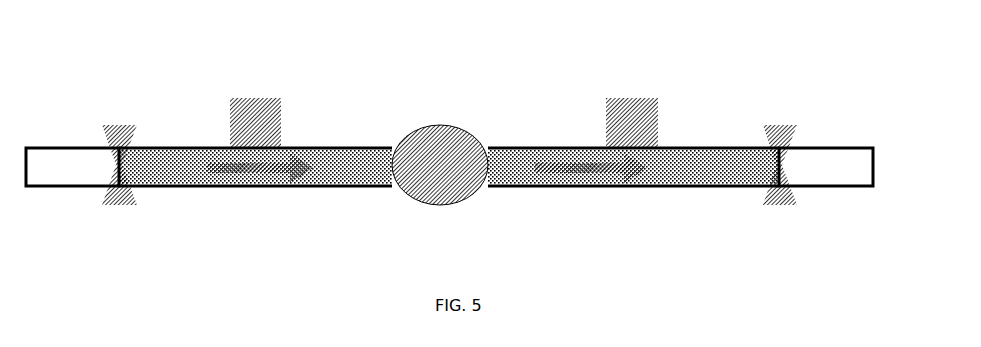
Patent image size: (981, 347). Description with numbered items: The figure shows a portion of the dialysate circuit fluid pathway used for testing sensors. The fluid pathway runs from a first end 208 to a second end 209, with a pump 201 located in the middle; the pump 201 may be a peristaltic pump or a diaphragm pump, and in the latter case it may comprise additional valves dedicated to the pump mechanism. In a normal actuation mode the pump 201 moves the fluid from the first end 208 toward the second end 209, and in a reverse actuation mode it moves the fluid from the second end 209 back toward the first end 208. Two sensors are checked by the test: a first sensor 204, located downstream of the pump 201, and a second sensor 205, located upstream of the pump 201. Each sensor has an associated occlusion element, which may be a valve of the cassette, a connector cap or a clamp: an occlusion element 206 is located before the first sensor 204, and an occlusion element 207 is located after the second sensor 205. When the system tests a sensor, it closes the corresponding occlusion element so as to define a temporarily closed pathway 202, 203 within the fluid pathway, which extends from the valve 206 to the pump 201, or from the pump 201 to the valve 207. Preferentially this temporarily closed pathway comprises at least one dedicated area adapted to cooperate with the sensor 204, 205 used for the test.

The pump 201 is at (440, 210).
The temporarily closed pathway 202 is at (325, 147).
The temporarily closed pathway 203 is at (677, 147).
The first sensor 204 is at (277, 93).
The second sensor 205 is at (648, 93).
The occlusion element 206 is at (138, 128).
The occlusion element 207 is at (782, 121).
The first end of the fluid pathway 208 is at (60, 184).
The second end of the fluid pathway 209 is at (847, 184).